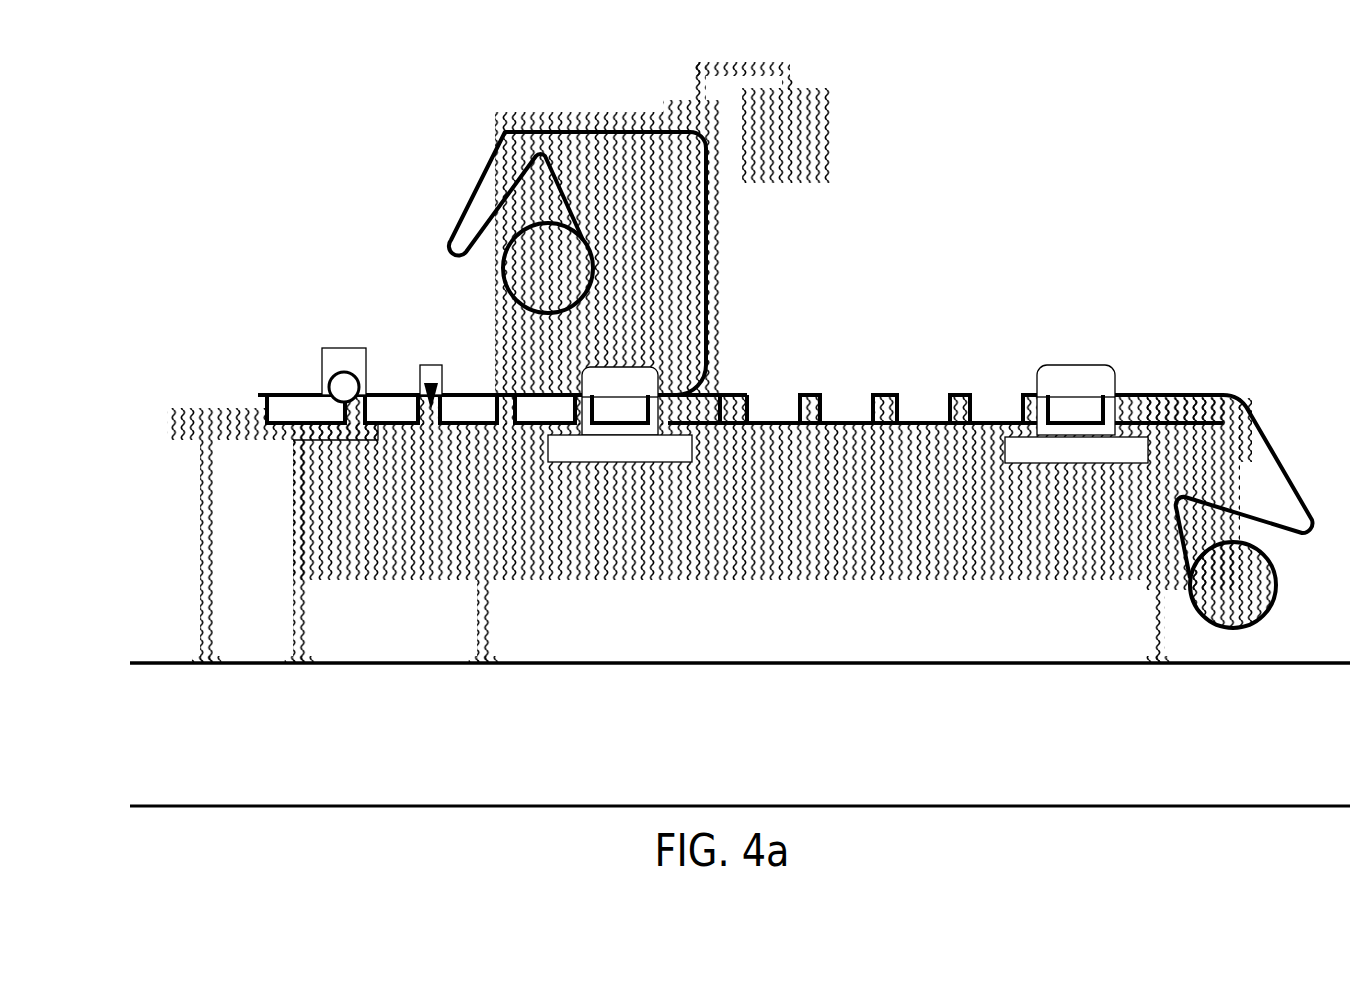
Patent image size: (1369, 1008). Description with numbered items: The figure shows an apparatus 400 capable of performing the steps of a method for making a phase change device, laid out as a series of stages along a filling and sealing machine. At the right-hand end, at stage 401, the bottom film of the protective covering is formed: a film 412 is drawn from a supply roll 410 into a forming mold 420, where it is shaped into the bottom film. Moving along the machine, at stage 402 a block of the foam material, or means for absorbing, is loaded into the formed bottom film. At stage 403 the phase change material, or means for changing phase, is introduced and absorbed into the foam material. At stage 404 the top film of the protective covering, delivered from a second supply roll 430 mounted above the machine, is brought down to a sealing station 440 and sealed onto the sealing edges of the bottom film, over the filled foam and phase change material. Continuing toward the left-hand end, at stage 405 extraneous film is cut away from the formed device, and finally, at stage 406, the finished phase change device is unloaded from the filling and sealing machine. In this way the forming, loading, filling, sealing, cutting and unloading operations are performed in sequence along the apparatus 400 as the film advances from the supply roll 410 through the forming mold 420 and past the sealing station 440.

The apparatus 400 is at (375, 124).
The forming stage 401 is at (1084, 357).
The loading stage 402 is at (998, 390).
The filling stage 403 is at (926, 390).
The sealing stage 404 is at (605, 332).
The cutting stage 405 is at (429, 358).
The unloading stage 406 is at (284, 391).
The supply roll 410 is at (1280, 590).
The film 412 is at (1283, 468).
The forming mold 420 is at (1126, 420).
The supply roll 430 is at (504, 296).
The sealing station 440 is at (688, 393).